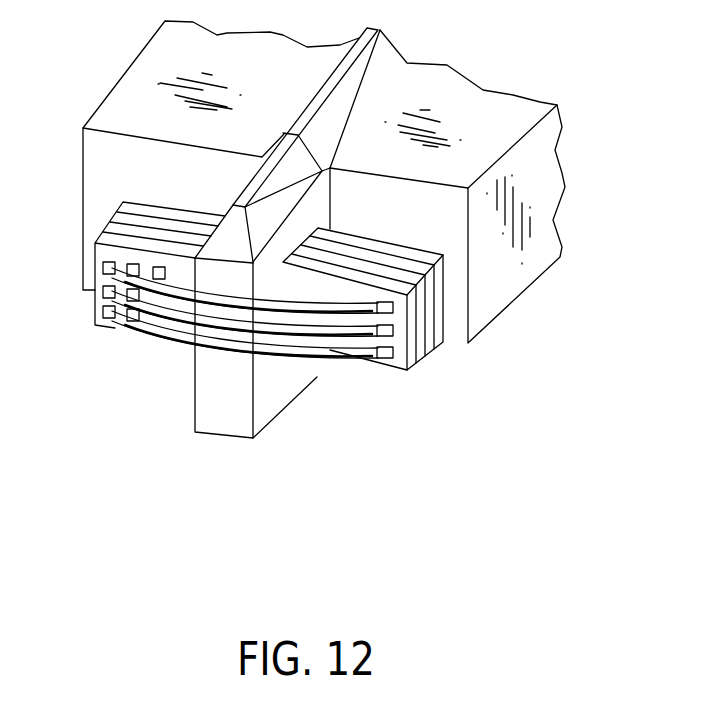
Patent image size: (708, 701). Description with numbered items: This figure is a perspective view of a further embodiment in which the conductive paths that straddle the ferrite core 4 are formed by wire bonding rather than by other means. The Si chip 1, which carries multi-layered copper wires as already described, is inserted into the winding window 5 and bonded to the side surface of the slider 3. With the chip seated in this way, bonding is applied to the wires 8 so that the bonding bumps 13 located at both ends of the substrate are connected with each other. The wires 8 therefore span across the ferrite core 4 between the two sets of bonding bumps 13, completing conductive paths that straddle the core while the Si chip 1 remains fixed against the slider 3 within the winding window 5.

The Si chip 1 is at (432, 352).
The slider 3 is at (548, 192).
The ferrite core 4 is at (267, 408).
The winding window 5 is at (283, 277).
The wires 8 is at (182, 355).
The bonding bumps 13 is at (107, 313).